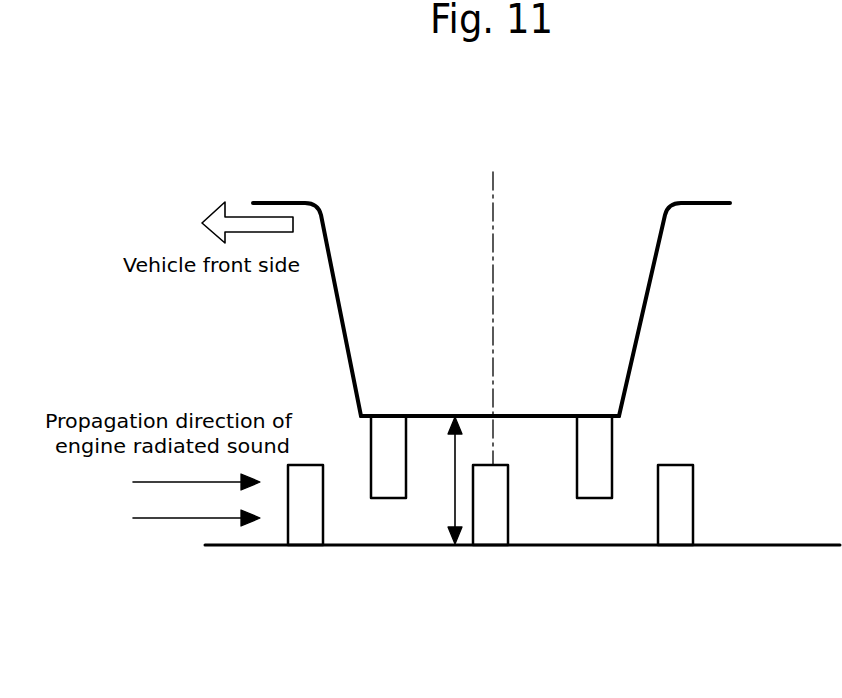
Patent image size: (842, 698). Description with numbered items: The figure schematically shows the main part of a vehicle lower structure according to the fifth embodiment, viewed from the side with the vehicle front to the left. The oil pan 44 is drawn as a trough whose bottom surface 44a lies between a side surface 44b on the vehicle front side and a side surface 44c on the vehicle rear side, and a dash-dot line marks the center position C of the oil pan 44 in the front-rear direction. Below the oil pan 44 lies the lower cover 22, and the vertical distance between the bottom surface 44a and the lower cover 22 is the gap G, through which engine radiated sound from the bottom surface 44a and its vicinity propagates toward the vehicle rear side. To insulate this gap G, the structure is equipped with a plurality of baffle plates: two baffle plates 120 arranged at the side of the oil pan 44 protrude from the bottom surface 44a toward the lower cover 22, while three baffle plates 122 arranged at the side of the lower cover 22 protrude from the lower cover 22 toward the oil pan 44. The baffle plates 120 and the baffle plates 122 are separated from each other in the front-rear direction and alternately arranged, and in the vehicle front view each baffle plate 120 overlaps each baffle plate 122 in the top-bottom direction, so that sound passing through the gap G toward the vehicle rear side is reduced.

The oil pan 44 is at (499, 258).
The bottom surface 44a is at (441, 418).
The side surface 44b is at (340, 318).
The side surface 44c is at (642, 317).
The baffle plate 120 is at (348, 447).
The baffle plate 122 is at (303, 548).
The lower cover 22 is at (802, 545).
The center position C is at (515, 454).
The gap G is at (453, 512).